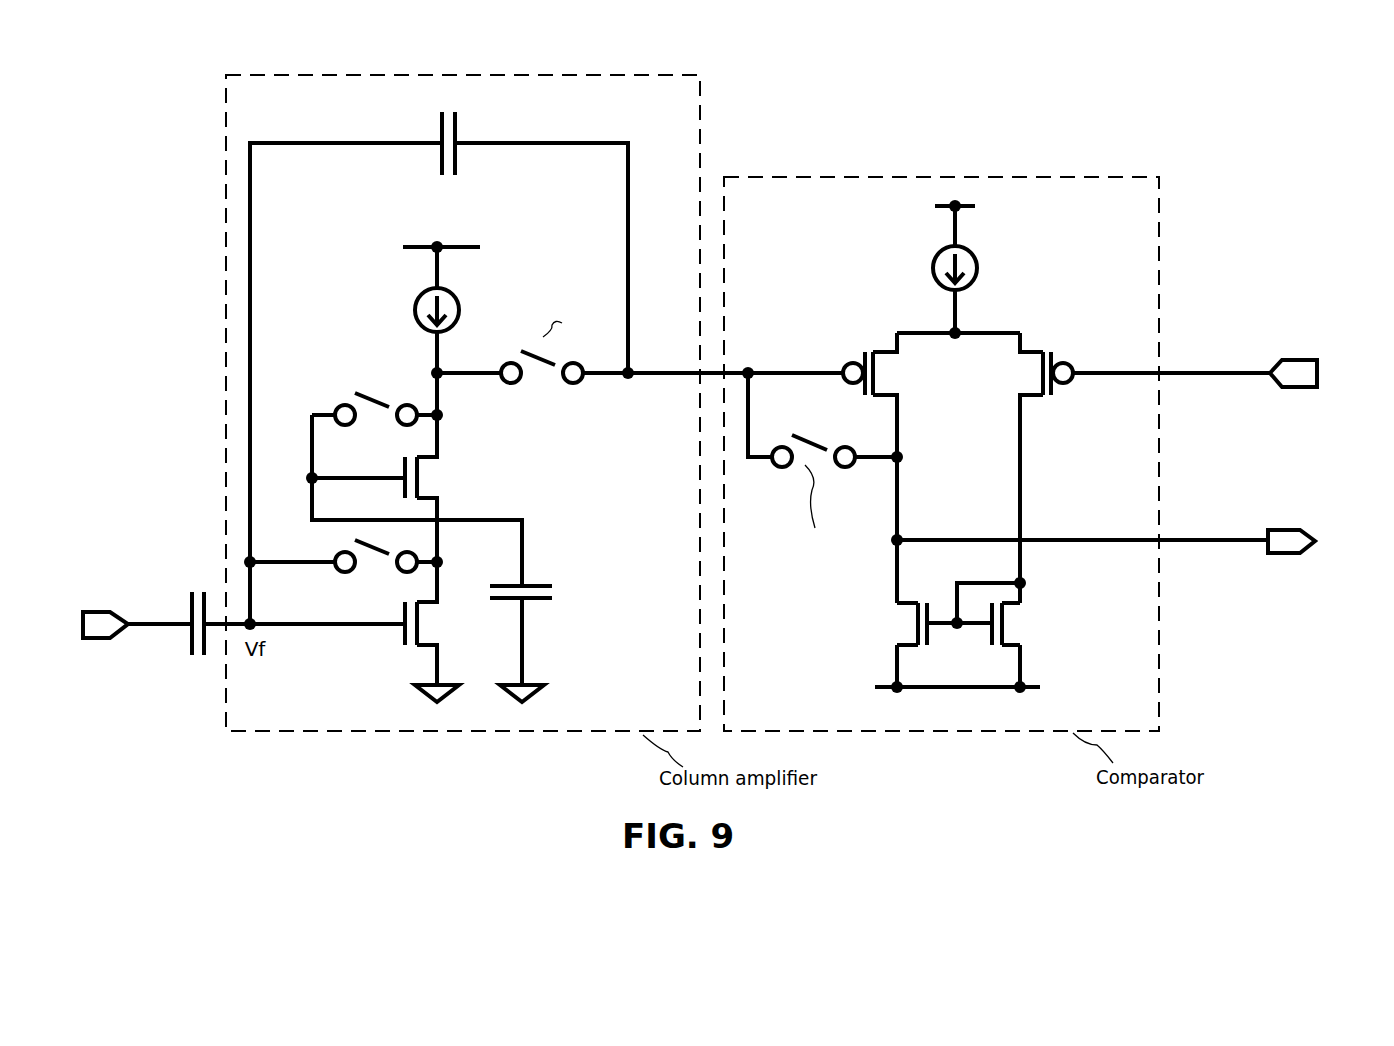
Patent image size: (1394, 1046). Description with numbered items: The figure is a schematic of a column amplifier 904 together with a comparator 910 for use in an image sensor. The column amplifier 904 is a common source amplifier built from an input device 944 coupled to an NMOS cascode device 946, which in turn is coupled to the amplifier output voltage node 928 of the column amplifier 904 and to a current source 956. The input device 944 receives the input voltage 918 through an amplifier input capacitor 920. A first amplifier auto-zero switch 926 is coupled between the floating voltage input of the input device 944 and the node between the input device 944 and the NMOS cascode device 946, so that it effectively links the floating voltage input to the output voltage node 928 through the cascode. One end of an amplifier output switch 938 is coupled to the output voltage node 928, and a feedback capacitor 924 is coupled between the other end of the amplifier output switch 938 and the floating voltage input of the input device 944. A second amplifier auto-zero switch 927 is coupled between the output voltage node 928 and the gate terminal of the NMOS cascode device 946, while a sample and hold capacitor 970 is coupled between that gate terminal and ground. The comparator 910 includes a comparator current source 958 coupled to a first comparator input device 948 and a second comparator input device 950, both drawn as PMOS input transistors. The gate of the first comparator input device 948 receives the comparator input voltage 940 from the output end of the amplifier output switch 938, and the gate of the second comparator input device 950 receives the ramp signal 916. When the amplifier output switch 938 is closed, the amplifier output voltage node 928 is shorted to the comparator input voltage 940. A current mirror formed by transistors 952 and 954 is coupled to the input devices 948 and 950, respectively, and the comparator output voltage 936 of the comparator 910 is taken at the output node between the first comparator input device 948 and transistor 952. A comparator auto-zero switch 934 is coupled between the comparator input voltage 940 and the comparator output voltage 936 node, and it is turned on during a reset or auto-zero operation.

The column amplifier 904 is at (700, 732).
The comparator 910 is at (977, 733).
The ramp signal 916 is at (1340, 363).
The input voltage Vin 918 is at (38, 615).
The amplifier input capacitor Cinamp 920 is at (183, 637).
The feedback capacitor Cfb 924 is at (467, 137).
The first amplifier auto-zero switch 926 is at (375, 568).
The second amplifier auto-zero switch 927 is at (377, 423).
The Vamp voltage node 928 is at (468, 337).
The comparator auto-zero switch 934 is at (800, 473).
The Vout voltage output 936 is at (1340, 528).
The amplifier output switch 938 is at (550, 357).
The Vincmp input 940 is at (788, 343).
The input device 944 is at (433, 625).
The NMOS cascode device 946 is at (438, 477).
The first comparator input device 948 is at (893, 383).
The second comparator input device 950 is at (1030, 383).
The current mirror transistor 952 is at (900, 625).
The current mirror transistor 954 is at (1023, 625).
The current source 956 is at (467, 293).
The comparator current source 958 is at (980, 255).
The sample and hold capacitor Csh 970 is at (532, 607).